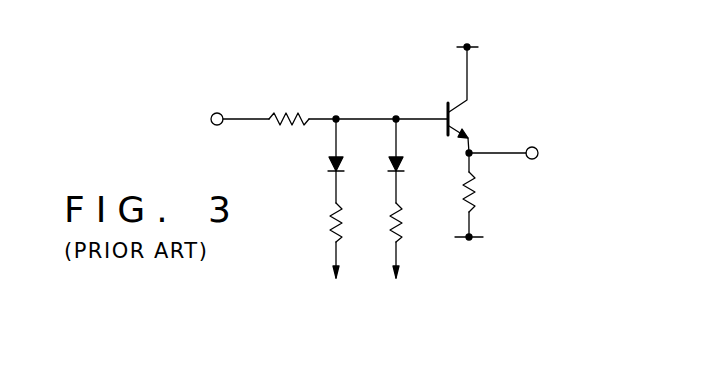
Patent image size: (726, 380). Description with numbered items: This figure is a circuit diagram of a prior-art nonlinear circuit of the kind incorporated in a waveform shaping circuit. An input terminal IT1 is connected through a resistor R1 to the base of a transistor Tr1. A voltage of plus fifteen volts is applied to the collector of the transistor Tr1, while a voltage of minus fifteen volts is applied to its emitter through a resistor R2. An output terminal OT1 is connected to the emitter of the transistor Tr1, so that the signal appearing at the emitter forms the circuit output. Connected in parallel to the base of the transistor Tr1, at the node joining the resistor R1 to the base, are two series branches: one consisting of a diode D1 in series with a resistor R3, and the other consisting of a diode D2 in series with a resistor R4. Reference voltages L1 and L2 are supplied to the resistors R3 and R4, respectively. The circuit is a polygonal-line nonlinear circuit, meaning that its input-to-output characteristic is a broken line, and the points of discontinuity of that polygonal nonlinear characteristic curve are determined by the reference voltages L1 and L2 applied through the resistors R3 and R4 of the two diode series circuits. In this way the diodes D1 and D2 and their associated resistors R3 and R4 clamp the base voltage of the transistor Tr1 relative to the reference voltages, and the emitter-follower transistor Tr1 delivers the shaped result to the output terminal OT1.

The input terminal IT1 is at (217, 112).
The resistor R1 is at (289, 112).
The diode D1 is at (341, 160).
The diode D2 is at (401, 160).
The resistor R3 is at (345, 233).
The resistor R4 is at (405, 233).
The reference voltage L1 is at (338, 286).
The reference voltage L2 is at (396, 286).
The transistor Tr1 is at (470, 122).
The output terminal OT1 is at (539, 153).
The resistor R2 is at (478, 195).